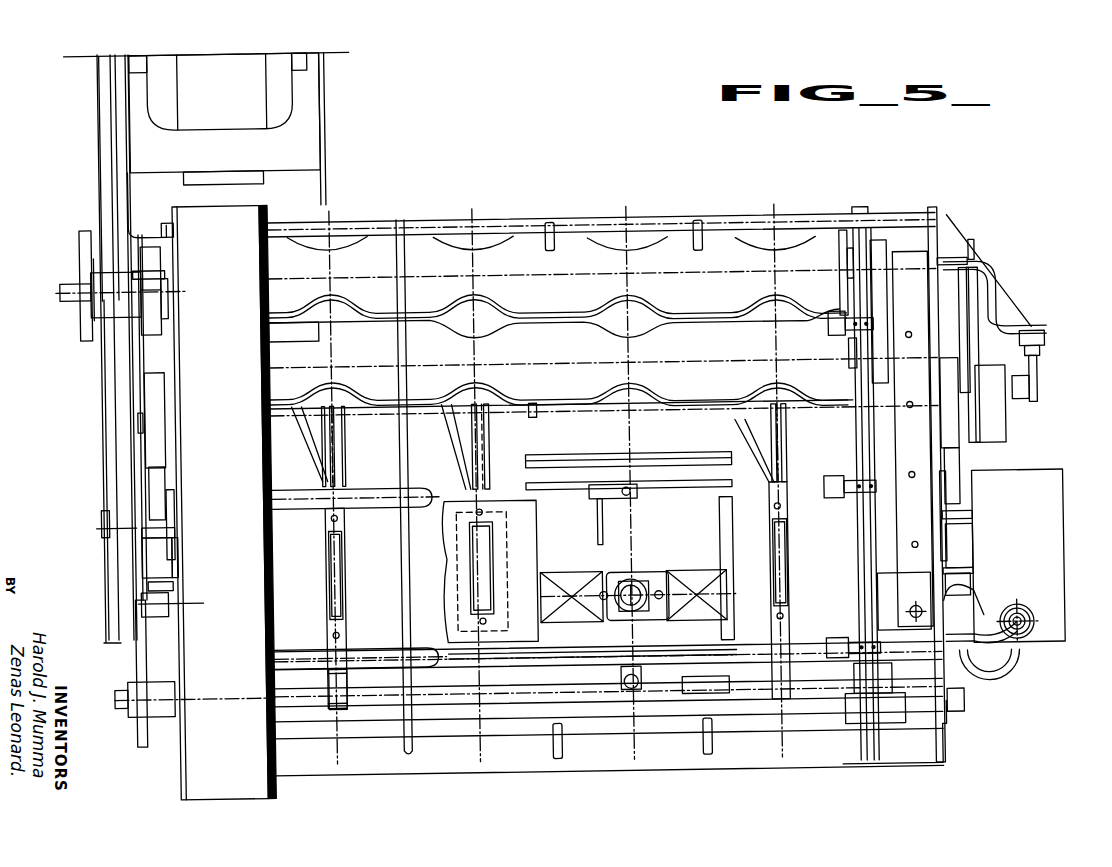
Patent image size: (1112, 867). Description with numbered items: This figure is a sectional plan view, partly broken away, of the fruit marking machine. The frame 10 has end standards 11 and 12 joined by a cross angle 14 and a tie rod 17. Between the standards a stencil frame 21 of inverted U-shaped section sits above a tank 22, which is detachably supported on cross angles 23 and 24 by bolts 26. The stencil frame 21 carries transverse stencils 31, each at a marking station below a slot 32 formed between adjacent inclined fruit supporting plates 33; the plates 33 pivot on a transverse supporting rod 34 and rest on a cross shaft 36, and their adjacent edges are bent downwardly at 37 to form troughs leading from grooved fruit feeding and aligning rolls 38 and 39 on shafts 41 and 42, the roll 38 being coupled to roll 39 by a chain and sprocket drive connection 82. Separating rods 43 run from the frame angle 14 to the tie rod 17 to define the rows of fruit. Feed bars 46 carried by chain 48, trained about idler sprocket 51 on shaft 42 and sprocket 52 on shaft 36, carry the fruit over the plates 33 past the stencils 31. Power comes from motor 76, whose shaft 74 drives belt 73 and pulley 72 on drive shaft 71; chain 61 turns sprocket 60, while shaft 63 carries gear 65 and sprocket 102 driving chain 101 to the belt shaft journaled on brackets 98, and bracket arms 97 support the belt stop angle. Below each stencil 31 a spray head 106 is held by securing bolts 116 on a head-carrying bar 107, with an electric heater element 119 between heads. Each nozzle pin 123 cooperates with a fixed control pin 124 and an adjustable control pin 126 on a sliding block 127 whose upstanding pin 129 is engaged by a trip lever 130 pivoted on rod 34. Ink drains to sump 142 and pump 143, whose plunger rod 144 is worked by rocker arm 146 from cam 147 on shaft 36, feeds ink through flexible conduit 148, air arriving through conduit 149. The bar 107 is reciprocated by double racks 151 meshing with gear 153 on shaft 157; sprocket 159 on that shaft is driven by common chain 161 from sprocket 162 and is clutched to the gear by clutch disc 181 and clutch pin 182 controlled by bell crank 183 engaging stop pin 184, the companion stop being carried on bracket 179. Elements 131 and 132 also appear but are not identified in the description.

The frame 10 is at (183, 792).
The end standard 11 is at (178, 757).
The end standard 12 is at (946, 732).
The cross angle 14 is at (756, 770).
The tie rod 17 is at (660, 212).
The stencil frame 21 is at (537, 518).
The tank 22 is at (665, 480).
The cross angle 23 is at (572, 452).
The cross angle 24 is at (540, 728).
The bolts 26 is at (622, 700).
The stencils 31 is at (345, 560).
The slot 32 is at (345, 632).
The fruit supporting plates 33 is at (372, 702).
The transverse supporting rod 34 is at (532, 405).
The cross shaft 36 is at (688, 705).
The downwardly bent edges 37 is at (345, 405).
The fruit feeding and aligning roll 38 is at (742, 324).
The fruit feeding and aligning roll 39 is at (735, 235).
The shaft 41 is at (848, 360).
The shaft 42 is at (845, 262).
The separating rods 43 is at (402, 222).
The bars 46 is at (828, 330).
The chain 48 is at (865, 546).
The idler sprocket 51 is at (862, 210).
The sprocket 52 is at (888, 715).
The sprocket 60 is at (118, 688).
The chain 61 is at (143, 610).
The shaft 63 is at (62, 292).
The gear 65 is at (165, 334).
The drive shaft 71 is at (100, 522).
The pulley 72 is at (103, 438).
The belt 73 is at (107, 388).
The motor shaft 74 is at (88, 62).
The motor 76 is at (203, 125).
The chain and sprocket drive connection 82 is at (887, 300).
The bracket arms 97 is at (176, 566).
The brackets 98 is at (170, 302).
The chain 101 is at (82, 236).
The sprocket 102 is at (74, 283).
The spray head 106 is at (638, 571).
The head-carrying bar 107 is at (600, 588).
The securing bolts 116 is at (665, 605).
The electric heater element 119 is at (545, 570).
The laterally projecting pin 123 is at (626, 578).
The fixed control pin 124 is at (600, 636).
The vertically adjustable control pin 126 is at (598, 523).
The sliding block 127 is at (605, 483).
The upstanding pin 129 is at (632, 484).
The trip lever 130 is at (330, 405).
The dashed plate 131 is at (457, 548).
The screw 132 is at (480, 622).
The sump 142 is at (1045, 470).
The pump 143 is at (1025, 610).
The plunger rod 144 is at (1032, 618).
The rocker arm 146 is at (982, 640).
The cam 147 is at (963, 704).
The flexible conduit 148 is at (1020, 658).
The flexible conduit 149 is at (975, 590).
The double racks 151 is at (164, 470).
The gear 153 is at (165, 388).
The shaft 157 is at (138, 418).
The sprocket 159 is at (977, 352).
The common chain 161 is at (968, 285).
The sprocket 162 is at (975, 247).
The bracket 179 is at (1005, 305).
The clutch disc 181 is at (1007, 425).
The clutch pin 182 is at (1028, 388).
The bell crank 183 is at (1036, 360).
The stop pin 184 is at (1040, 340).